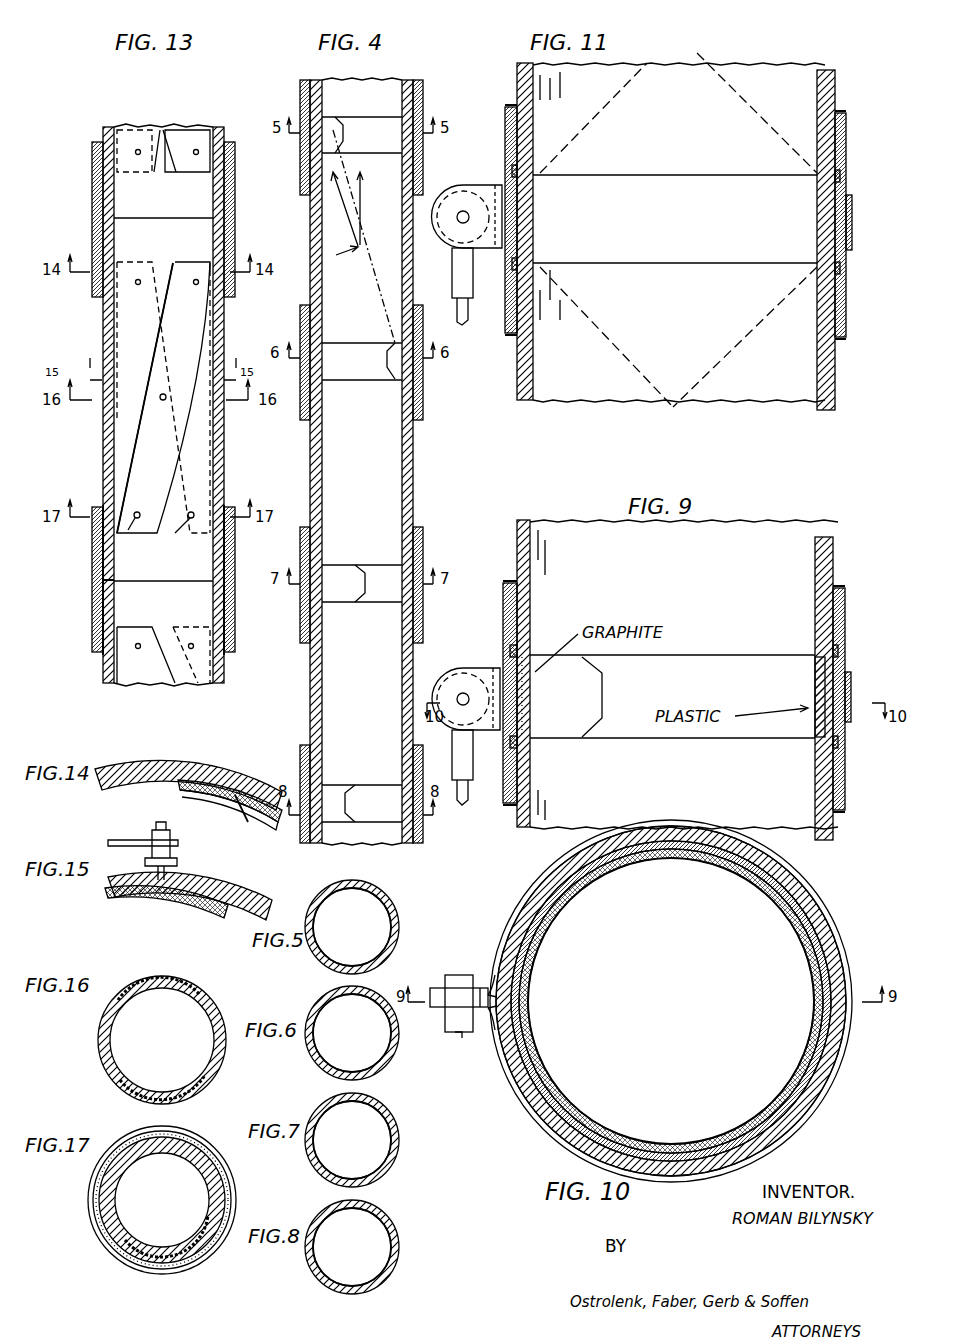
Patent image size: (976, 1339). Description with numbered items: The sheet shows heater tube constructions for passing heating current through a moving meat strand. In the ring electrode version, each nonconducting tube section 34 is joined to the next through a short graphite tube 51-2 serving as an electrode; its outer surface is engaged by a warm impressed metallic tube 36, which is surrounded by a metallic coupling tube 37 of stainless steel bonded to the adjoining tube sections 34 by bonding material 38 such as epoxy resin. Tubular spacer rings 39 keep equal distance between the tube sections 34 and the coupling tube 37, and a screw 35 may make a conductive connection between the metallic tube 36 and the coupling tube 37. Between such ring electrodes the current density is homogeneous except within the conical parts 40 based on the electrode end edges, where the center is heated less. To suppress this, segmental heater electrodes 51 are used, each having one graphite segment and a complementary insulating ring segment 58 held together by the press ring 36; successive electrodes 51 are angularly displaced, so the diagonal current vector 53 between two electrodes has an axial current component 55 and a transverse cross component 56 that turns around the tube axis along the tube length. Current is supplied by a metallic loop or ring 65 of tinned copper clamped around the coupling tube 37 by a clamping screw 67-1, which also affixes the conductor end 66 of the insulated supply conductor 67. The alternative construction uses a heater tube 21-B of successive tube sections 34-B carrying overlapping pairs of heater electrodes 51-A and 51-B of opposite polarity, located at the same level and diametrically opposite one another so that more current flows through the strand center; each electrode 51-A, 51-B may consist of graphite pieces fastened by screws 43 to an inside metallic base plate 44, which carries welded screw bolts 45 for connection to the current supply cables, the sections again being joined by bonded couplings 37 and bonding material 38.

In FIG. 13, the heater tube 21-B is at (189, 105).
In FIG. 4, the nonconducting tube section 34 is at (410, 92).
In FIG. 11, the nonconducting tube section 34 is at (530, 128).
In FIG. 9, the nonconducting tube section 34 is at (530, 600).
In FIG. 13, the tube section 34-B is at (103, 128).
In FIG. 14, the tube section 34-B is at (105, 790).
In FIG. 15, the tube section 34-B is at (190, 896).
In FIG. 11, the screw 35 is at (515, 216).
In FIG. 9, the screw 35 is at (520, 698).
In FIG. 11, the metallic tube 36 is at (534, 196).
In FIG. 9, the metallic tube 36 is at (520, 714).
In FIG. 10, the metallic tube 36 is at (808, 1061).
In FIG. 13, the metallic coupling tube 37 is at (92, 183).
In FIG. 11, the metallic coupling tube 37 is at (505, 148).
In FIG. 9, the metallic coupling tube 37 is at (503, 620).
In FIG. 10, the metallic coupling tube 37 is at (840, 975).
In FIG. 17, the metallic coupling tube 37 is at (102, 1246).
In FIG. 13, the bonding material 38 is at (98, 548).
In FIG. 11, the bonding material 38 is at (514, 112).
In FIG. 9, the bonding material 38 is at (512, 585).
In FIG. 13, the tubular spacer ring 39 is at (108, 594).
In FIG. 11, the tubular spacer ring 39 is at (515, 168).
In FIG. 9, the tubular spacer ring 39 is at (520, 640).
In FIG. 11, the conical part 40 is at (710, 72).
In FIG. 13, the screw 43 is at (157, 537).
In FIG. 14, the screw 43 is at (240, 792).
In FIG. 14, the base plate 44 is at (192, 796).
In FIG. 13, the screw bolt 45 is at (160, 400).
In FIG. 15, the screw bolt 45 is at (168, 862).
In FIG. 4, the segmental heater electrode 51 is at (328, 130).
In FIG. 9, the segmental heater electrode 51 is at (534, 685).
In FIG. 10, the segmental heater electrode 51 is at (525, 1012).
In FIG. 5, the segmental heater electrode 51 is at (318, 937).
In FIG. 6, the segmental heater electrode 51 is at (388, 1022).
In FIG. 7, the segmental heater electrode 51 is at (318, 1122).
In FIG. 8, the segmental heater electrode 51 is at (380, 1272).
In FIG. 11, the graphite tube 51-2 is at (534, 245).
In FIG. 13, the heater electrode 51-A is at (128, 455).
In FIG. 14, the heater electrode 51-A is at (236, 818).
In FIG. 15, the heater electrode 51-A is at (125, 900).
In FIG. 16, the heater electrode 51-A is at (142, 995).
In FIG. 17, the heater electrode 51-A is at (120, 1175).
In FIG. 13, the heater electrode 51-B is at (128, 318).
In FIG. 16, the heater electrode 51-B is at (178, 1088).
In FIG. 17, the heater electrode 51-B is at (195, 1242).
In FIG. 4, the diagonal current vector 53 is at (342, 209).
In FIG. 4, the axial current component 55 is at (371, 208).
In FIG. 4, the transverse cross component 56 is at (342, 260).
In FIG. 4, the insulating ring segment 58 is at (363, 128).
In FIG. 9, the insulating ring segment 58 is at (815, 690).
In FIG. 10, the insulating ring segment 58 is at (790, 898).
In FIG. 5, the insulating ring segment 58 is at (395, 905).
In FIG. 6, the insulating ring segment 58 is at (315, 1050).
In FIG. 7, the insulating ring segment 58 is at (396, 1142).
In FIG. 8, the insulating ring segment 58 is at (314, 1245).
In FIG. 11, the metallic loop or ring 65 is at (445, 188).
In FIG. 9, the metallic loop or ring 65 is at (490, 668).
In FIG. 10, the metallic loop or ring 65 is at (508, 948).
In FIG. 11, the conductor end 66 is at (468, 276).
In FIG. 9, the conductor end 66 is at (468, 760).
In FIG. 10, the conductor end 66 is at (482, 1035).
In FIG. 11, the supply conductor 67 is at (468, 318).
In FIG. 9, the supply conductor 67 is at (468, 797).
In FIG. 10, the clamping screw 67-1 is at (458, 1040).